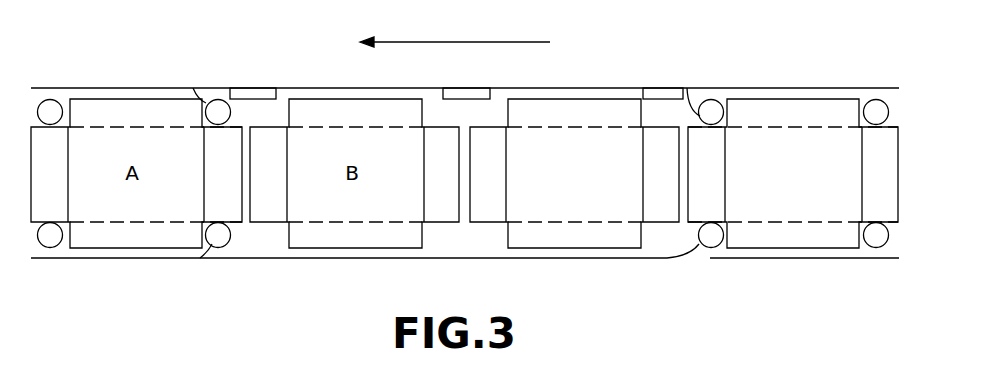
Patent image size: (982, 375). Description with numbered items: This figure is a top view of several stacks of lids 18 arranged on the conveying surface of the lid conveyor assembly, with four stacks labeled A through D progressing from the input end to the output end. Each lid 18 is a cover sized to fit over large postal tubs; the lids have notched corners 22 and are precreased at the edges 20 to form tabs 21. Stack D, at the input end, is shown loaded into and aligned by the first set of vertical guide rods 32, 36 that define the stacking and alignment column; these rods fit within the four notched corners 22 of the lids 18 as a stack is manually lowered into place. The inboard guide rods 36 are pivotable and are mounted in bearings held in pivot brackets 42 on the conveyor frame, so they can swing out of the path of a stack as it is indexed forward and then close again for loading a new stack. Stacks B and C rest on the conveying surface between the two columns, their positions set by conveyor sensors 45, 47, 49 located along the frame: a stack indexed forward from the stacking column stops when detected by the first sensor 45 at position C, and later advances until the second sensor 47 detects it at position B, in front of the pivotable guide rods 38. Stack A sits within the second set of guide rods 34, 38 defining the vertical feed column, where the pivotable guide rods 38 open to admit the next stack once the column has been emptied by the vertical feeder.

The lid 18 is at (113, 99).
The edge 20 is at (154, 127).
The tab 21 is at (310, 112).
The notched corner 22 is at (282, 127).
The vertical guide rod 32 is at (878, 106).
The vertical guide rod 34 is at (48, 99).
The pivotable guide rod 36 is at (712, 100).
The pivotable guide rod 38 is at (220, 99).
The pivot bracket 42 is at (690, 250).
The conveyor sensor 45 is at (466, 94).
The conveyor sensor 47 is at (250, 99).
The conveyor sensor 49 is at (668, 94).